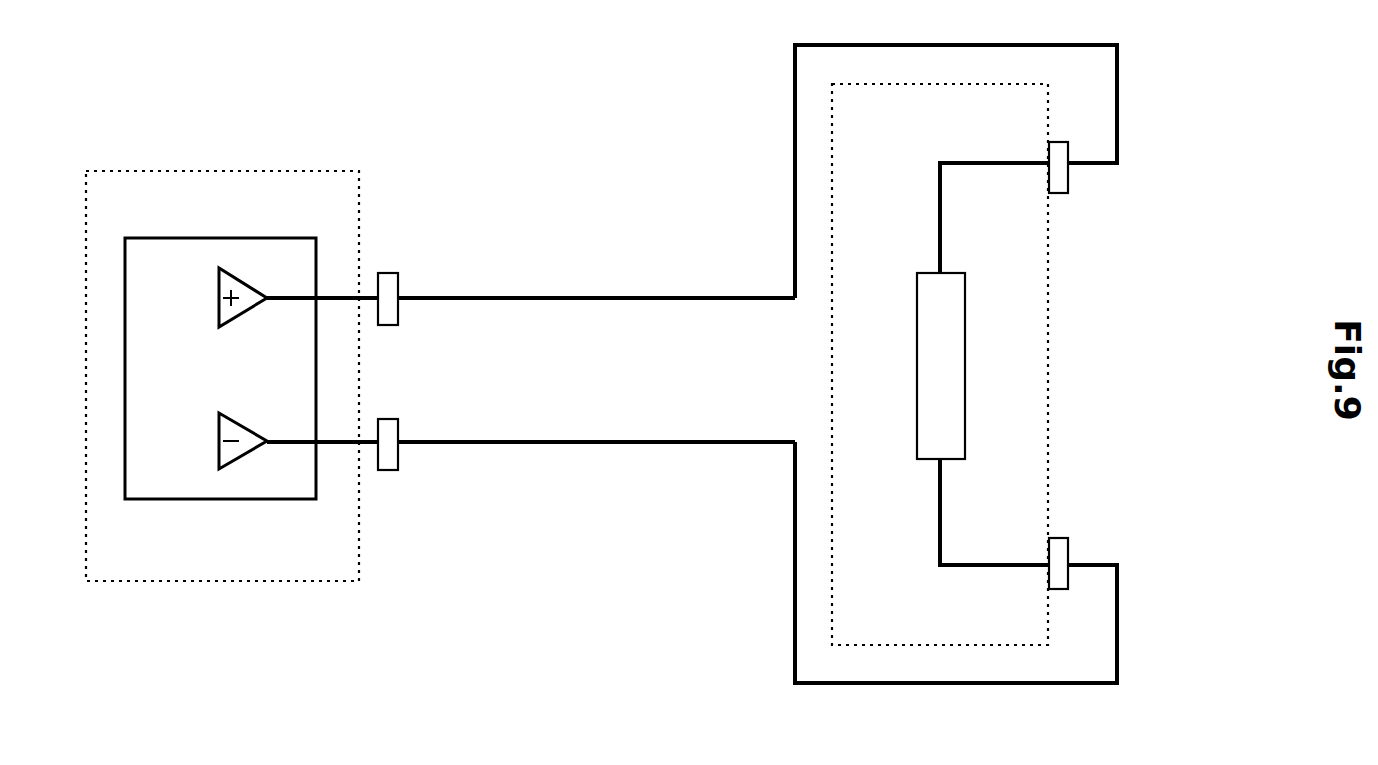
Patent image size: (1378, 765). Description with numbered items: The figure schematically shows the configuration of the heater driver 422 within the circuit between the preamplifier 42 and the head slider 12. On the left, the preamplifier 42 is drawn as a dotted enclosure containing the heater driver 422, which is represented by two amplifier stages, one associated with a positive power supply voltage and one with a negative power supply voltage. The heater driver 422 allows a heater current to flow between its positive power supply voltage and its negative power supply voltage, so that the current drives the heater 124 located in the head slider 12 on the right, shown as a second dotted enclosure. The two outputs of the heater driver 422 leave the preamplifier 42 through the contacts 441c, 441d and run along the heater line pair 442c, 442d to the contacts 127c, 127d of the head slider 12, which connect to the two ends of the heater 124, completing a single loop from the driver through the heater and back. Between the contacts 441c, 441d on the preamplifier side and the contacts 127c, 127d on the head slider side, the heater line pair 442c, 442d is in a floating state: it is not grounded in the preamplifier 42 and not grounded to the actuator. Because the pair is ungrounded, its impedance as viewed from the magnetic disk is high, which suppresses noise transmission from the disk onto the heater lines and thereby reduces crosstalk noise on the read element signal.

The head slider 12 is at (832, 396).
The heater 124 is at (955, 460).
The contact 127c is at (1063, 538).
The contact 127d is at (1059, 193).
The preamplifier 42 is at (212, 582).
The heater driver 422 is at (203, 500).
The contact 441c is at (389, 470).
The contact 441d is at (389, 273).
The heater line 442c is at (566, 447).
The heater line 442d is at (563, 297).